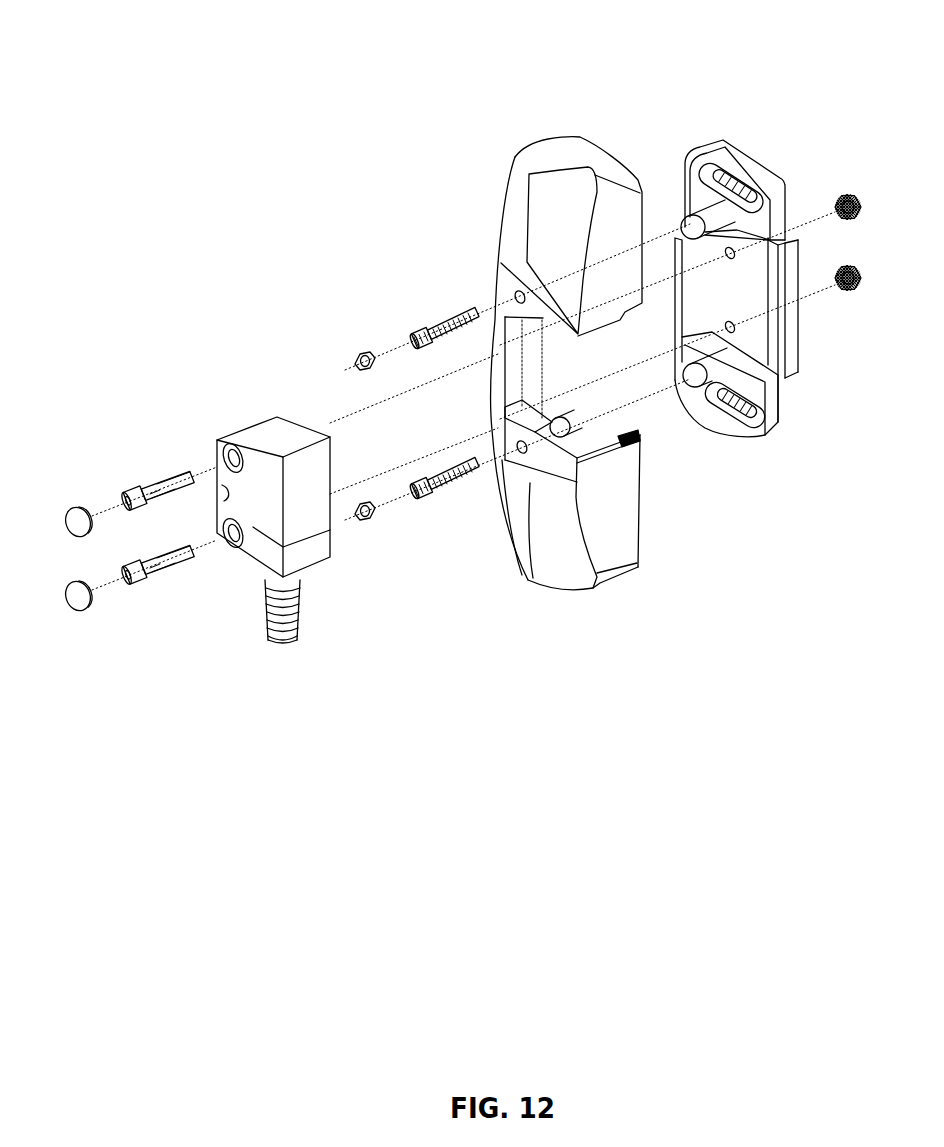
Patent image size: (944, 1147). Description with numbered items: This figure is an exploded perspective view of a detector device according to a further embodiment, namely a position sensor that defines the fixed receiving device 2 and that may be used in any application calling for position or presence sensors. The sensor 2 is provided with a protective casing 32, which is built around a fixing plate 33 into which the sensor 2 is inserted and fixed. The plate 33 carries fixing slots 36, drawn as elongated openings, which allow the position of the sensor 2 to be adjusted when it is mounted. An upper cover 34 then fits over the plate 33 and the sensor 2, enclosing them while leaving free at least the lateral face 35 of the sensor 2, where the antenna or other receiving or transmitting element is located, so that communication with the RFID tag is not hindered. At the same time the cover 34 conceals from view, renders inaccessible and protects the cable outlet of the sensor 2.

The fixed receiving device 2 is at (195, 411).
The protective casing 32 is at (598, 102).
The fixing plate 33 is at (780, 178).
The upper cover 34 is at (510, 200).
The lateral face 35 is at (313, 517).
The fixing slots 36 is at (732, 174).